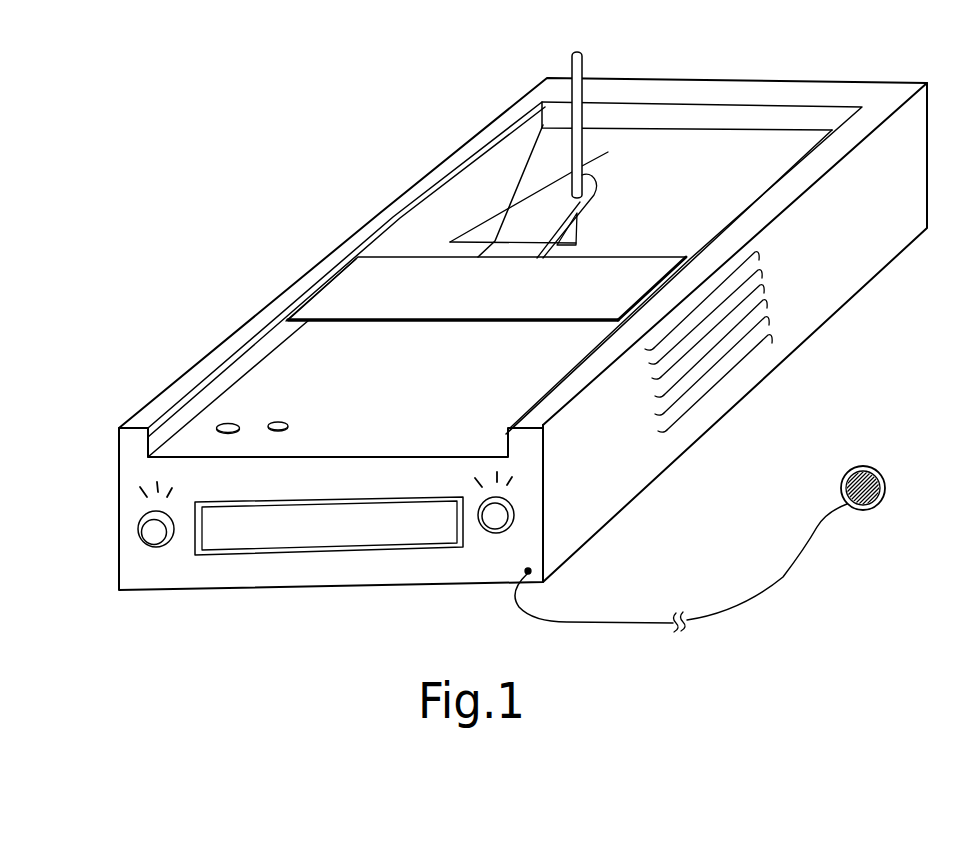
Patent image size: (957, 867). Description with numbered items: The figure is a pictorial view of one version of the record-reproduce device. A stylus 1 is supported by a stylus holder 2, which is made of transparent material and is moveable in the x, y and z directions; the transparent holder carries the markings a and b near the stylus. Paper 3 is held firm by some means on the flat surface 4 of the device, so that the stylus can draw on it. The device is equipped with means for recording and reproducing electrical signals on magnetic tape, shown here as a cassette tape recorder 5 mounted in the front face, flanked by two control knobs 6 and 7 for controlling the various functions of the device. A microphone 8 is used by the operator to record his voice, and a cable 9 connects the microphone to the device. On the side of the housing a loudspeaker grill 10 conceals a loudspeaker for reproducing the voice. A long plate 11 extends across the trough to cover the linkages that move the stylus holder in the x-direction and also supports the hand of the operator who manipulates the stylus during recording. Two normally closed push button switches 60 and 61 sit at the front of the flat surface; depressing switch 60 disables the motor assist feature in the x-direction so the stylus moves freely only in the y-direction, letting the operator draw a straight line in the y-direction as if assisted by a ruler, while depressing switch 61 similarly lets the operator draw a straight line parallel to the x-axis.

The stylus 1 is at (581, 50).
The stylus holder 2 is at (593, 184).
The paper 3 is at (470, 388).
The flat surface 4 is at (392, 412).
The cassette tape recorder 5 is at (323, 525).
The control knob 6 is at (155, 551).
The control knob 7 is at (492, 535).
The microphone 8 is at (886, 477).
The cable 9 is at (740, 607).
The loudspeaker grill 10 is at (730, 313).
The long plate 11 is at (593, 268).
The push button switch 60 is at (217, 427).
The push button switch 61 is at (289, 429).
The triangle side a is at (535, 189).
The triangle vertex b is at (500, 244).